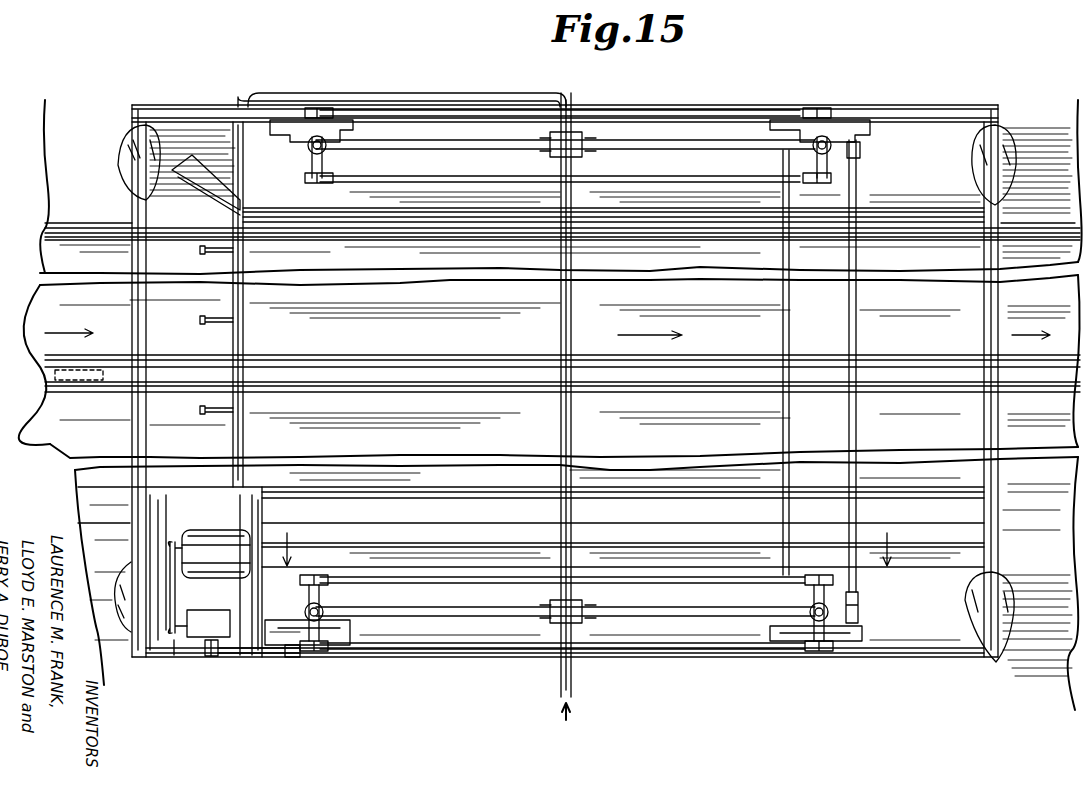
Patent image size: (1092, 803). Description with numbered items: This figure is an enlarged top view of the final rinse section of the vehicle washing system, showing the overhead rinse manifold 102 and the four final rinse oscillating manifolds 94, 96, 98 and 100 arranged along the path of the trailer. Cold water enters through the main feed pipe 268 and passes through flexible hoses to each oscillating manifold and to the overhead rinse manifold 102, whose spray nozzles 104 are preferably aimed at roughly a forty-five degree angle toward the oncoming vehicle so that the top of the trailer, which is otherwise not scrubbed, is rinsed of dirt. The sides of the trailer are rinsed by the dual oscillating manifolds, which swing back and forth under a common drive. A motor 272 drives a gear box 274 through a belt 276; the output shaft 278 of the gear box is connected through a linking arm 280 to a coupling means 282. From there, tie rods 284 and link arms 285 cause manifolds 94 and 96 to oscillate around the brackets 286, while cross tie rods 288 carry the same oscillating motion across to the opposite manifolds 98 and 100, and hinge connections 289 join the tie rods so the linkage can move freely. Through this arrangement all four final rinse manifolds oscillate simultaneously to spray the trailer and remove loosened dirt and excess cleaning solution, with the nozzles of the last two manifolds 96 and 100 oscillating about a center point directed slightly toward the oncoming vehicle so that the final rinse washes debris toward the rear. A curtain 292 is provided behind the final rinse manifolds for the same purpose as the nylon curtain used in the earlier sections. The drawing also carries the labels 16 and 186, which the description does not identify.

The direction arrow 16 is at (597, 547).
The final rinse oscillating manifold 94 is at (327, 611).
The final rinse oscillating manifold 96 is at (800, 605).
The final rinse oscillating manifold 98 is at (327, 154).
The final rinse oscillating manifold 100 is at (789, 152).
The overhead rinse manifold 102 is at (246, 350).
The spray nozzles 104 is at (206, 250).
The conveyor element 186 is at (63, 382).
The main feed pipe 268 is at (412, 80).
The motor 272 is at (228, 538).
The gear box 274 is at (208, 623).
The belt 276 is at (172, 592).
The output shaft 278 is at (208, 657).
The linking arm 280 is at (235, 656).
The coupling means 282 is at (294, 658).
The tie rods 284 is at (478, 178).
The link arms 285 is at (306, 165).
The brackets 286 is at (308, 147).
The cross tie rods 288 is at (828, 314).
The hinge connections 289 is at (321, 108).
The curtain 292 is at (120, 172).